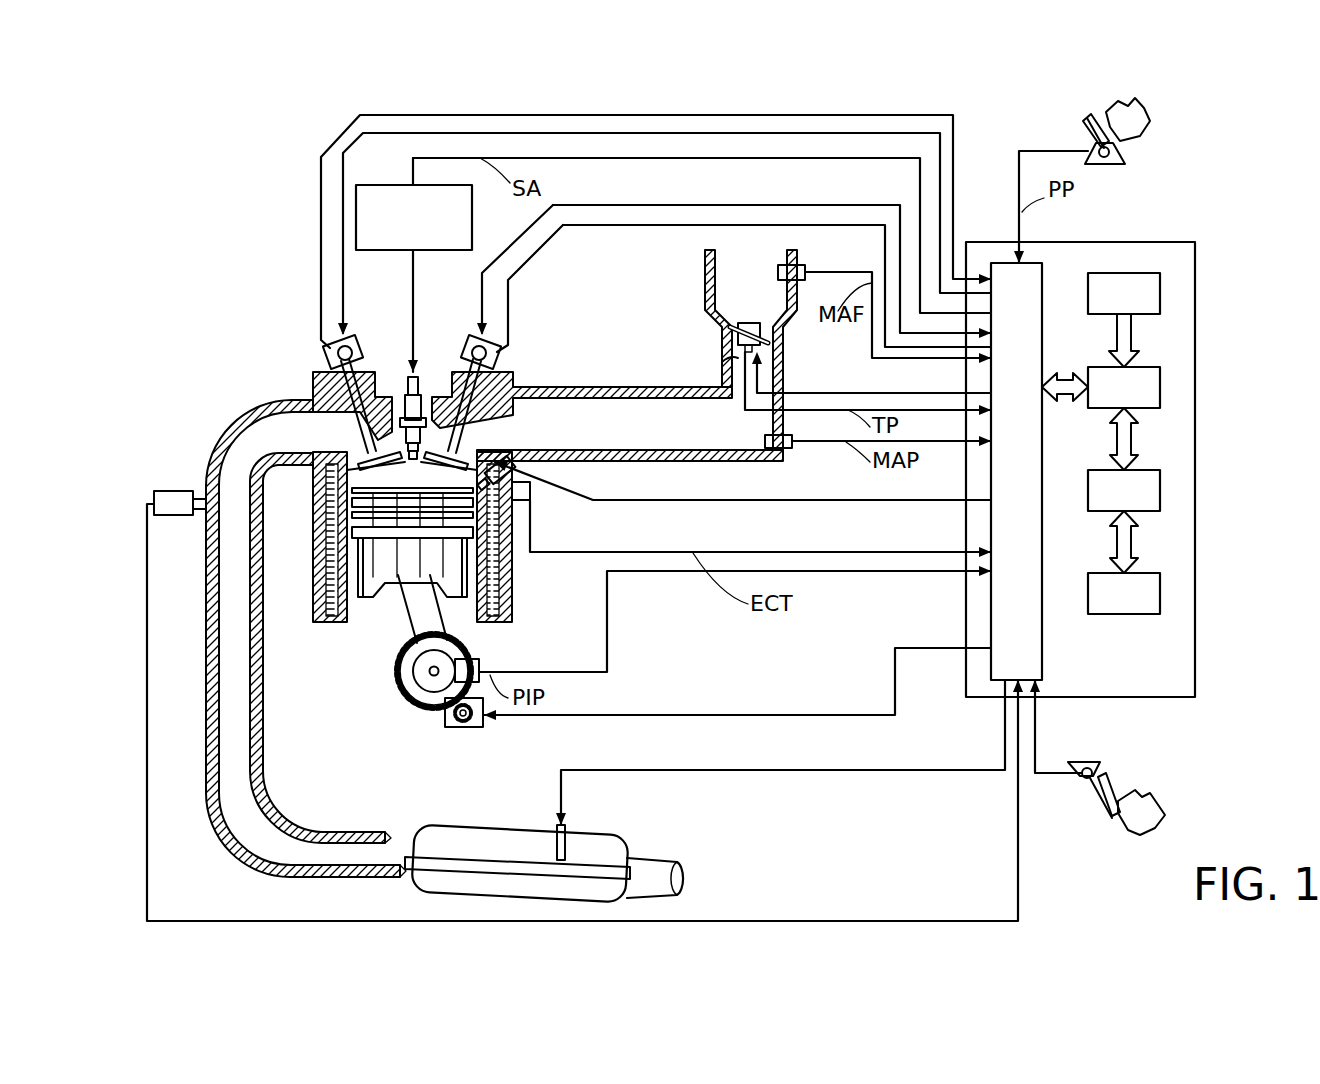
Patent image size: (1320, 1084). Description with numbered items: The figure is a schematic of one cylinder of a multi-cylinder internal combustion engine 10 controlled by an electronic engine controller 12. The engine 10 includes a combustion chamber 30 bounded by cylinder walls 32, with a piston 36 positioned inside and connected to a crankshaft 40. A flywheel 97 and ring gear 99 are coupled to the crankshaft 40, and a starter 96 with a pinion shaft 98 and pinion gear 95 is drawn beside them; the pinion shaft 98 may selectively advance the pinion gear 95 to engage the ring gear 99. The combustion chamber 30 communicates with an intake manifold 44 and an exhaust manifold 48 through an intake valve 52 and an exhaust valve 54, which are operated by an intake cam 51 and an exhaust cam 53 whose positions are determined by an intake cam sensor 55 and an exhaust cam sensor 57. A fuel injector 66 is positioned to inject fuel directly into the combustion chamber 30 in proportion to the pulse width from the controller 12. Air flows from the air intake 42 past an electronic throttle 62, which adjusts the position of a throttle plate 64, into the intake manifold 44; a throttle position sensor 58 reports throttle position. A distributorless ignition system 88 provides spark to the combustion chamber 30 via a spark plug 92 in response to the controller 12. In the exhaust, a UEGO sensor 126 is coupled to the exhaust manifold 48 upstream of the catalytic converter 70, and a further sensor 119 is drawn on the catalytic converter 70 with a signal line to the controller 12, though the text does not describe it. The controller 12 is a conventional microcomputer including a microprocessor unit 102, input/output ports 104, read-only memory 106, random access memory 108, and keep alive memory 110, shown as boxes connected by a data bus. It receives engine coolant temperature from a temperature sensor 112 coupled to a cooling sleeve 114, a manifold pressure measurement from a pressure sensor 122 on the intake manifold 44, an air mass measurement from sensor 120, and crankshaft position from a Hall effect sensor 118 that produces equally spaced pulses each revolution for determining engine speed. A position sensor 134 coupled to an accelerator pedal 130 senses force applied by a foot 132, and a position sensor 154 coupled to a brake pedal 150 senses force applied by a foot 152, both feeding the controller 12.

The internal combustion engine 10 is at (245, 320).
The electronic engine controller 12 is at (1196, 252).
The combustion chamber 30 is at (410, 470).
The cylinder walls 32 is at (351, 614).
The piston 36 is at (395, 575).
The crankshaft 40 is at (423, 707).
The air intake 42 is at (762, 302).
The intake manifold 44 is at (697, 440).
The exhaust manifold 48 is at (292, 444).
The intake cam 51 is at (472, 337).
The intake valve 52 is at (462, 436).
The exhaust cam 53 is at (357, 337).
The exhaust valve 54 is at (356, 426).
The intake cam sensor 55 is at (488, 356).
The exhaust cam sensor 57 is at (332, 350).
The throttle position sensor 58 is at (722, 360).
The electronic throttle 62 is at (760, 330).
The throttle plate 64 is at (730, 334).
The fuel injector 66 is at (506, 466).
The catalytic converter 70 is at (430, 829).
The distributorless ignition system 88 is at (373, 185).
The spark plug 92 is at (418, 377).
The pinion gear 95 is at (472, 724).
The starter 96 is at (478, 728).
The flywheel 97 is at (410, 668).
The pinion shaft 98 is at (461, 724).
The ring gear 99 is at (430, 709).
The microprocessor unit 102 is at (1163, 388).
The input/output ports 104 is at (1045, 270).
The read-only memory 106 is at (1163, 294).
The random access memory 108 is at (1163, 492).
The keep alive memory 110 is at (1163, 595).
The temperature sensor 112 is at (533, 500).
The cooling sleeve 114 is at (510, 576).
The Hall effect sensor 118 is at (482, 661).
The exhaust gas sensor 119 is at (567, 823).
The air mass sensor 120 is at (804, 265).
The pressure sensor 122 is at (790, 449).
The Universal Exhaust Gas Oxygen sensor 126 is at (154, 497).
The accelerator pedal 130 is at (1086, 126).
The foot 132 is at (1136, 112).
The position sensor 134 is at (1128, 160).
The brake pedal 150 is at (1113, 823).
The foot 152 is at (1150, 792).
The position sensor 154 is at (1080, 774).